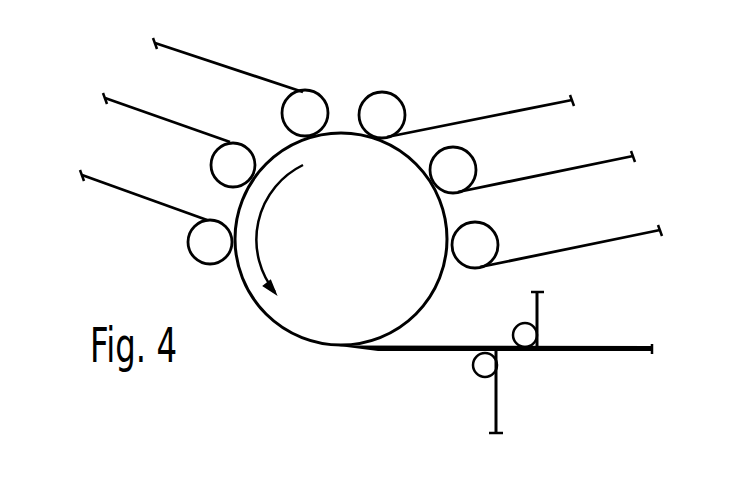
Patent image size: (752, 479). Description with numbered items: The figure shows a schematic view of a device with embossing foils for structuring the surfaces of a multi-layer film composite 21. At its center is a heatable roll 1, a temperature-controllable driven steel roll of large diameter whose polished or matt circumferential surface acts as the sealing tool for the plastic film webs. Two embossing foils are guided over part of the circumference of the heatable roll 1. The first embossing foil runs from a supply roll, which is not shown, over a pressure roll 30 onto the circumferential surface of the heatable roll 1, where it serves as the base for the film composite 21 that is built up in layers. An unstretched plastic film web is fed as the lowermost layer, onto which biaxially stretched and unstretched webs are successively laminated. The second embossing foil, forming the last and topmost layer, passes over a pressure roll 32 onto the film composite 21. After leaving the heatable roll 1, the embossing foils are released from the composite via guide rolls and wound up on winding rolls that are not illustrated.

The heatable roll 1 is at (295, 330).
The multi-layer film composite 21 is at (397, 362).
The pressure roll 30 is at (480, 243).
The pressure roll 32 is at (196, 240).